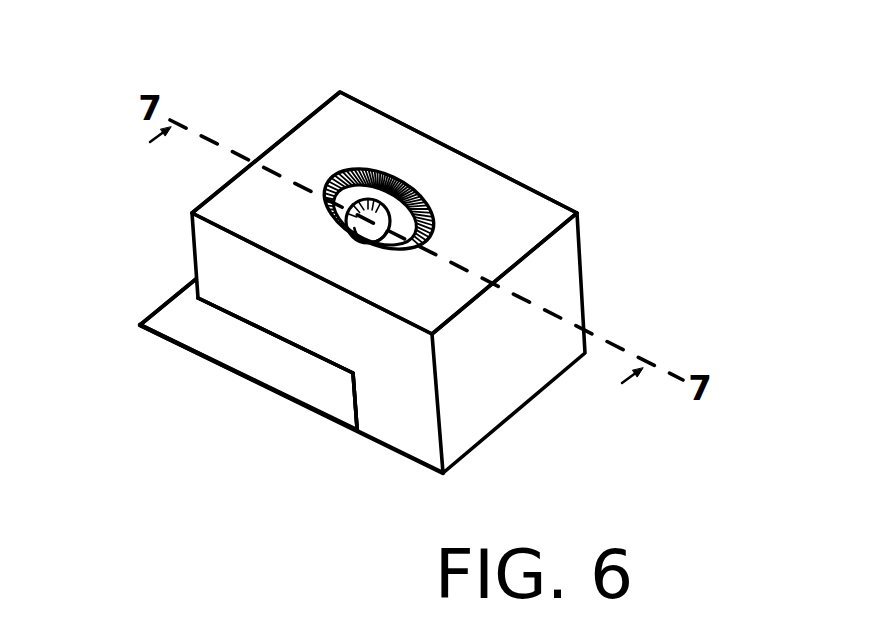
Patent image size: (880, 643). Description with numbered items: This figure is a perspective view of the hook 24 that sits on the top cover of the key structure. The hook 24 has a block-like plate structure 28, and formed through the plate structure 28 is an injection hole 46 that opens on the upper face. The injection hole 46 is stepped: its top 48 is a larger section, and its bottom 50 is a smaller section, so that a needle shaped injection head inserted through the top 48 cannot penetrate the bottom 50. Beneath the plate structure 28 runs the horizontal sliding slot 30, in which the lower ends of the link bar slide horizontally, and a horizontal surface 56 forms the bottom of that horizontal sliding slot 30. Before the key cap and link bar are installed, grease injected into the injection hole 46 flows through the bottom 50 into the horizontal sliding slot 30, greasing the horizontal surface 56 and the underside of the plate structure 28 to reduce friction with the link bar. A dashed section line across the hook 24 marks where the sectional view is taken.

The hook 24 is at (625, 131).
The plate structure 28 is at (307, 157).
The horizontal sliding slot 30 is at (323, 390).
The injection hole 46 is at (382, 217).
The top of the injection hole 48 is at (343, 178).
The bottom of the injection hole 50 is at (362, 204).
The horizontal surface 56 is at (188, 318).